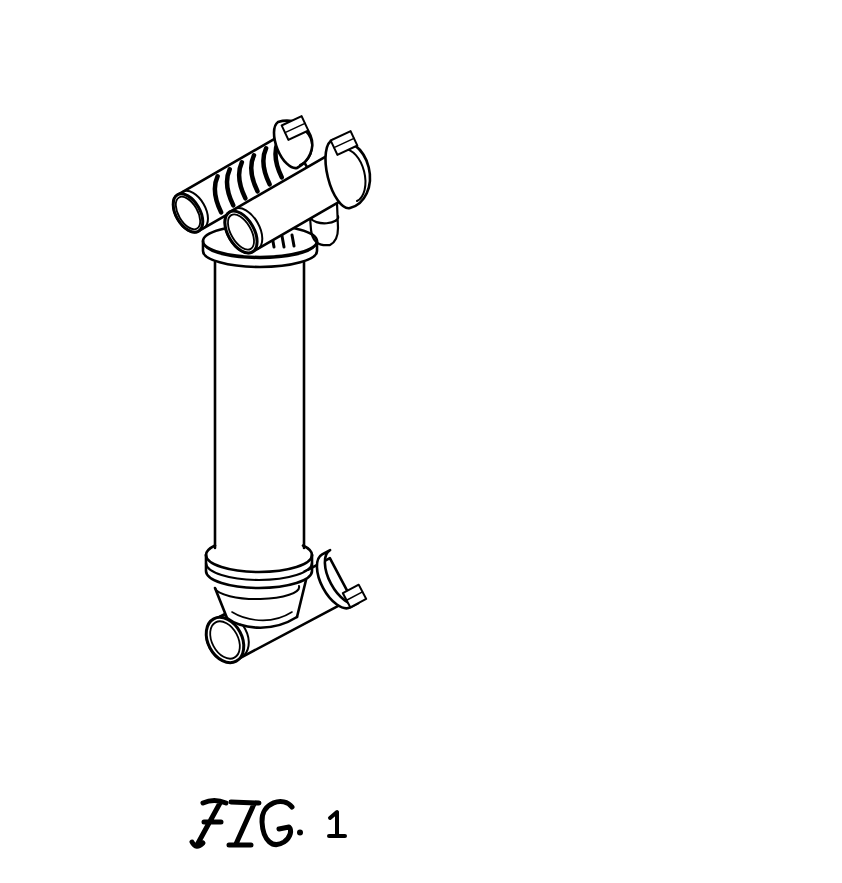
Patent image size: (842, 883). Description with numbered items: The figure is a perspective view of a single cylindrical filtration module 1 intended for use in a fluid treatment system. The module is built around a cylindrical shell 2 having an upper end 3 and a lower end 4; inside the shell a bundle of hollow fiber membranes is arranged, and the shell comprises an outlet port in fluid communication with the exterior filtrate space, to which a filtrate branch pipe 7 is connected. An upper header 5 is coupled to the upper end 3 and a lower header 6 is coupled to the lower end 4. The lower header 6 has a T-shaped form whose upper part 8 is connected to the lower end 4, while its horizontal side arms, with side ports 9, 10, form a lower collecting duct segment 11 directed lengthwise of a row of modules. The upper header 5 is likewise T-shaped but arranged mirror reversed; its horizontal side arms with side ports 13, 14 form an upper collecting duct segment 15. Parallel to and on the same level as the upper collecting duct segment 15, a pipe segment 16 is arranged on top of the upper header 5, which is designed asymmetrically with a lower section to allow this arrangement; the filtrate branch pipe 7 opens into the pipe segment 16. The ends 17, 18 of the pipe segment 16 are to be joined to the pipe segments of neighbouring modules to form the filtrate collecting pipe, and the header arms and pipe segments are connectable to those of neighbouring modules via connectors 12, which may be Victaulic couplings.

The cylindrical filtration module 1 is at (436, 369).
The cylindrical shell 2 is at (305, 467).
The upper end 3 is at (215, 256).
The lower end 4 is at (313, 547).
The upper header 5 is at (207, 238).
The lower header 6 is at (217, 601).
The filtrate branch pipe 7 is at (335, 238).
The upper part 8 is at (292, 603).
The side port 9 is at (228, 642).
The side port 10 is at (352, 575).
The lower collecting duct segment 11 is at (253, 633).
The connector 12 is at (293, 122).
The side port 13 is at (187, 217).
The side port 14 is at (310, 137).
The upper collecting duct segment 15 is at (208, 190).
The pipe segment 16 is at (308, 205).
The end of pipe segment 17 is at (217, 257).
The end of pipe segment 18 is at (368, 173).